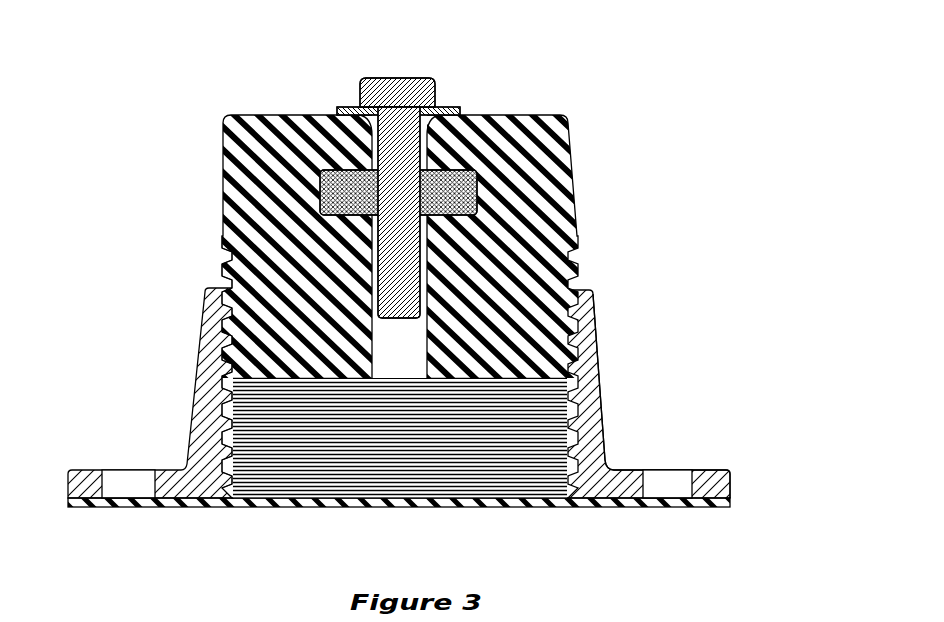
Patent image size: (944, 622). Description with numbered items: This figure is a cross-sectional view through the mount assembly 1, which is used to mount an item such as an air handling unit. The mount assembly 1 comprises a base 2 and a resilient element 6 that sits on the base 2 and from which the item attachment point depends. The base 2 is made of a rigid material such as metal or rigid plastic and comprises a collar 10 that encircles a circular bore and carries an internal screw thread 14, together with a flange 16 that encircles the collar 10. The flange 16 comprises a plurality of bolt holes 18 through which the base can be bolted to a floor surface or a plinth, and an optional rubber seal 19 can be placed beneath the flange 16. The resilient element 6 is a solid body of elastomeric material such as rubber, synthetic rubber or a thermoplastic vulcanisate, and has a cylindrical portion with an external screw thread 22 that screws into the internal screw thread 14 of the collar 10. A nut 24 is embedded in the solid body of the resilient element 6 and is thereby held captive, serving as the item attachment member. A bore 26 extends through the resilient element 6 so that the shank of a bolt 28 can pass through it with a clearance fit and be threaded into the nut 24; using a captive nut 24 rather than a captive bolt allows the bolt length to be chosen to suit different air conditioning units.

The mount assembly 1 is at (568, 68).
The base 2 is at (706, 427).
The resilient element 6 is at (573, 167).
The collar 10 is at (599, 356).
The internal screw thread 14 is at (232, 448).
The flange 16 is at (716, 486).
The bolt holes 18 is at (130, 484).
The rubber seal 19 is at (244, 508).
The external screw thread 22 is at (225, 268).
The nut 24 is at (335, 192).
The bore 26 is at (388, 353).
The bolt 28 is at (393, 85).